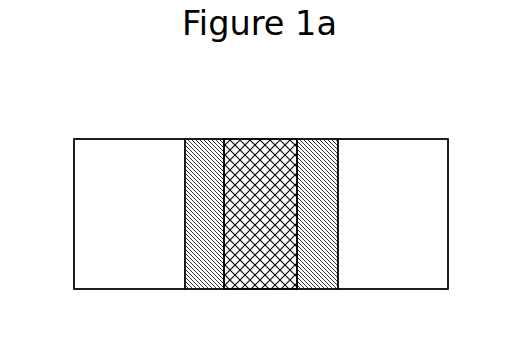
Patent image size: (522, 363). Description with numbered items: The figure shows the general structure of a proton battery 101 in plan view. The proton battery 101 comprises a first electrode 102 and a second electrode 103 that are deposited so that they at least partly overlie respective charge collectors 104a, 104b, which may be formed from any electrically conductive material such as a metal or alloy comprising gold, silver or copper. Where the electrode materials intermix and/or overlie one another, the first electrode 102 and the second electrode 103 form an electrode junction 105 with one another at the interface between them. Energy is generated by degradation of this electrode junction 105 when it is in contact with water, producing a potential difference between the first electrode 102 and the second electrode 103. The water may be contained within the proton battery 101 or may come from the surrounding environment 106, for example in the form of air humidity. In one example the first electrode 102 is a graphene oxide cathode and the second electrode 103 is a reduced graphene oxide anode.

The proton battery 101 is at (124, 91).
The first electrode 102 is at (203, 155).
The second electrode 103 is at (317, 162).
The charge collector 104a is at (129, 214).
The charge collector 104b is at (393, 214).
The electrode junction 105 is at (268, 265).
The surrounding environment 106 is at (260, 191).